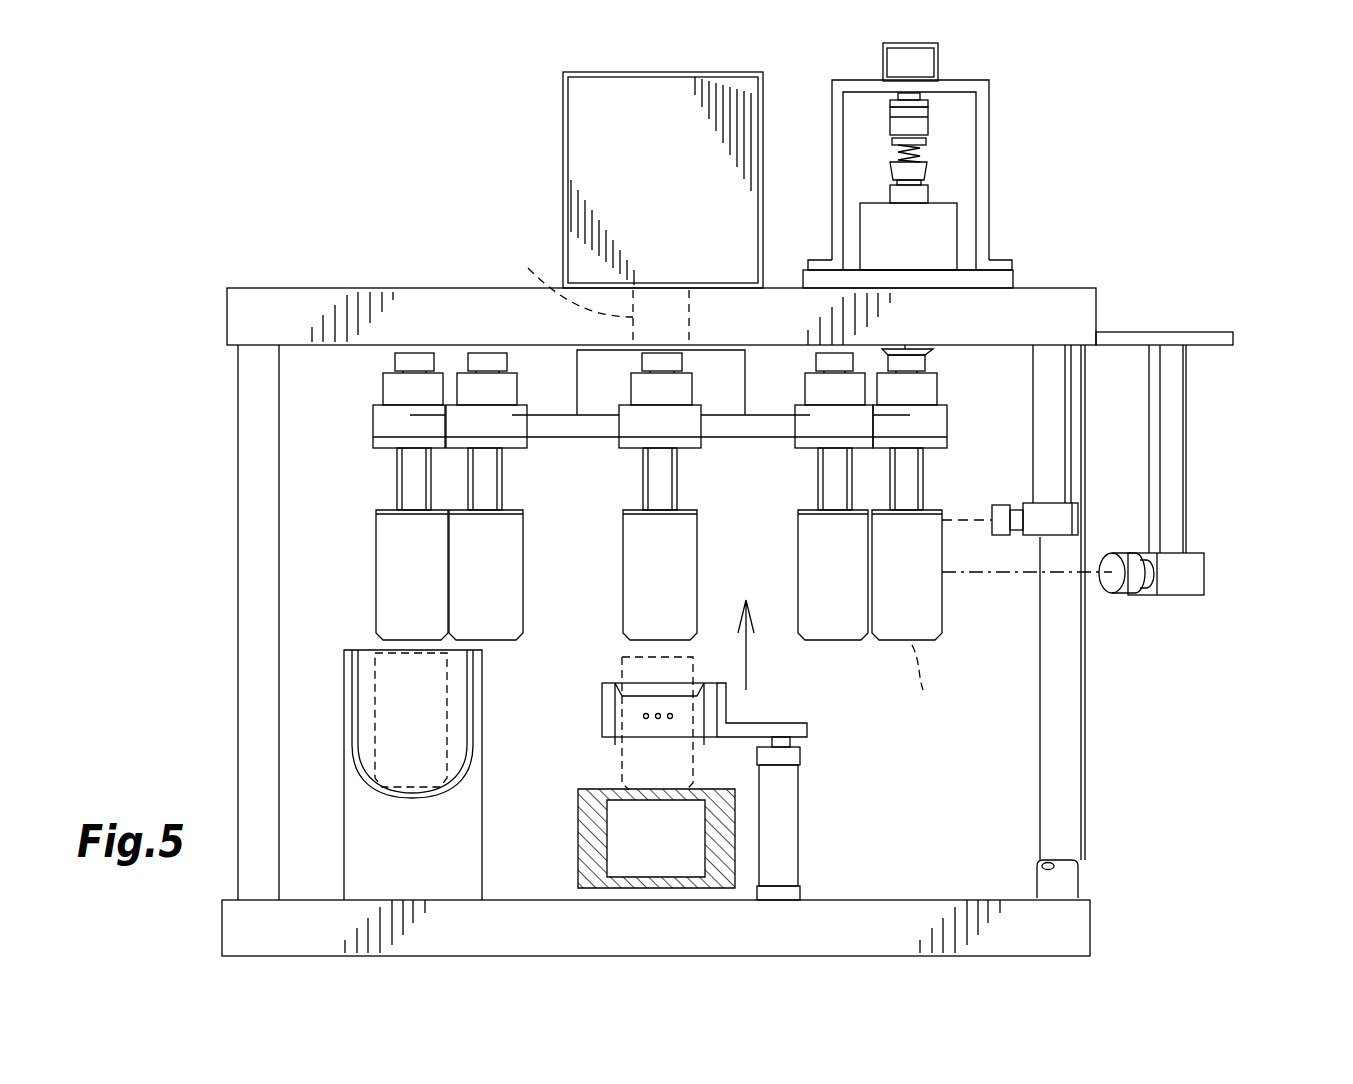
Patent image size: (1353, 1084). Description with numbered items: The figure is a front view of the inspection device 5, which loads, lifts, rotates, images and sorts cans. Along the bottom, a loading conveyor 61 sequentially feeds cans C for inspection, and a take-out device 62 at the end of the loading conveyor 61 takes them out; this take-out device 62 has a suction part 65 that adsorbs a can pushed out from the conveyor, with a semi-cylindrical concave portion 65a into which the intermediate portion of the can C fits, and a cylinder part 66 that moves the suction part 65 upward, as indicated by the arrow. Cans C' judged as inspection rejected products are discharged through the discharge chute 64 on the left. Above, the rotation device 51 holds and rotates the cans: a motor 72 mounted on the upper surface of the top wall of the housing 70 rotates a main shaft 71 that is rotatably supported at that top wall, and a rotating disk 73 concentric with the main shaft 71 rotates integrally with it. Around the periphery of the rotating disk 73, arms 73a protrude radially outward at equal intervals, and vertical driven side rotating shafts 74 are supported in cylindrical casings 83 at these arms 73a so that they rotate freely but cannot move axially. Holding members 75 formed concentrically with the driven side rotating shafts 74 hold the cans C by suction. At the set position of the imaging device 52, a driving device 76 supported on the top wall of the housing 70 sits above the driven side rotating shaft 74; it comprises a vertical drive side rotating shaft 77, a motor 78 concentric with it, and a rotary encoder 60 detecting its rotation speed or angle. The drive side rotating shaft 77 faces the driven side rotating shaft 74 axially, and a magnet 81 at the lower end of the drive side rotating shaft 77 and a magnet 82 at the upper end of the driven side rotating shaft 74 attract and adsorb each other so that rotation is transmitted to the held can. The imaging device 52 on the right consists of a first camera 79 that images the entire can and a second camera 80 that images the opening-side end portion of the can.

The inspection device 5 is at (1113, 168).
The rotation device 51 is at (1012, 130).
The imaging device 52 is at (1233, 573).
The rotary encoder 60 is at (938, 60).
The loading conveyor 61 is at (578, 848).
The take-out device 62 is at (782, 723).
The discharge chute 64 is at (344, 728).
The suction part 65 is at (606, 717).
The semi-cylindrical concave portion 65a is at (630, 737).
The cylinder part 66 is at (790, 843).
The housing 70 is at (290, 288).
The main shaft 71 is at (600, 289).
The motor 72 is at (587, 185).
The rotating disk 73 is at (560, 427).
The arms 73a is at (490, 426).
The driven side rotating shafts 74 is at (497, 497).
The holding members 75 is at (508, 555).
The driving device 76 is at (988, 208).
The drive side rotating shaft 77 is at (930, 181).
The motor 78 is at (948, 240).
The first camera 79 is at (1178, 595).
The second camera 80 is at (1063, 513).
The magnet 81 is at (930, 354).
The magnet 82 is at (925, 365).
The cylindrical casings 83 is at (935, 396).
The can C is at (740, 716).
The can C' is at (372, 720).